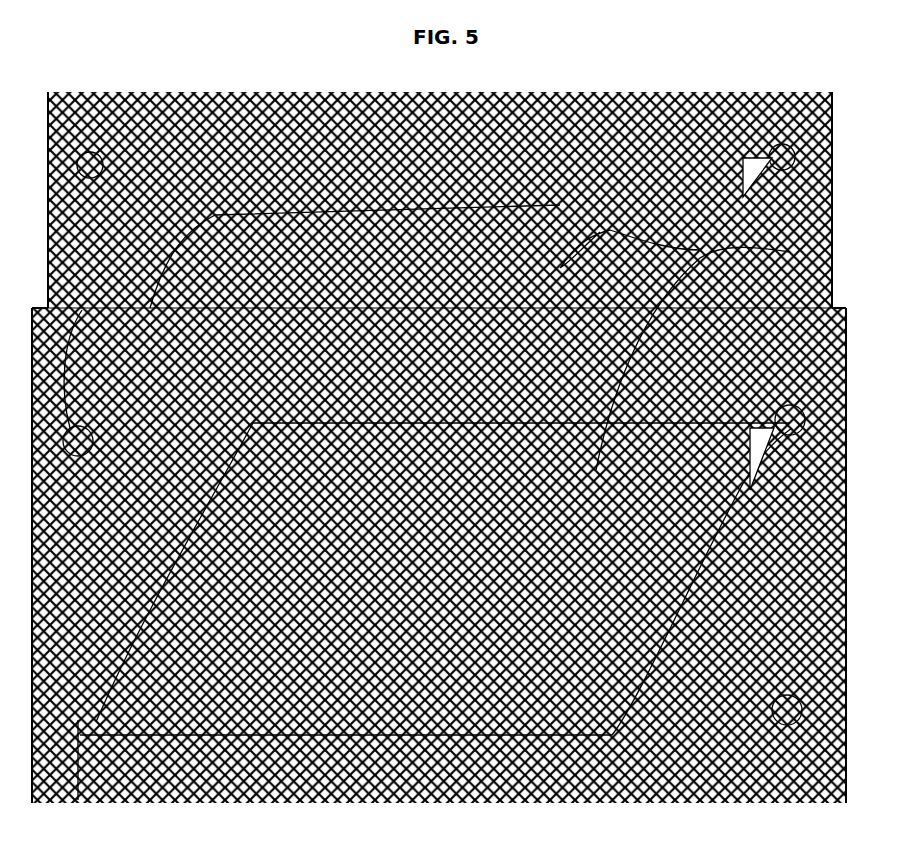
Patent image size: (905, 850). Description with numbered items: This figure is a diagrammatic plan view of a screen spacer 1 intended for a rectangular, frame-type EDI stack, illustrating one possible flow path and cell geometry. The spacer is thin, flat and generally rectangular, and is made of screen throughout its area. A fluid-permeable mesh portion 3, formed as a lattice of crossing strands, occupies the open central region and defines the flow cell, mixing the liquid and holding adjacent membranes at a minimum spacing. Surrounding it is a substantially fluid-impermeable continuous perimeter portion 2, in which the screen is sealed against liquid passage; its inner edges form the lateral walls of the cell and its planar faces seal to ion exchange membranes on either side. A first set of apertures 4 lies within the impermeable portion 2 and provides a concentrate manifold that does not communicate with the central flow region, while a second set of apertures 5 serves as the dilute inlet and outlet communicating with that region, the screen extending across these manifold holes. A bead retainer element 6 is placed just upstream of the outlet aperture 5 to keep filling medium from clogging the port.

The screen spacer 1 is at (176, 92).
The continuous perimeter portion 2 is at (540, 106).
The mesh portion 3 is at (596, 186).
The first set of apertures 4 is at (92, 158).
The second set of apertures 5 is at (790, 150).
The bead retainer element 6 is at (755, 166).